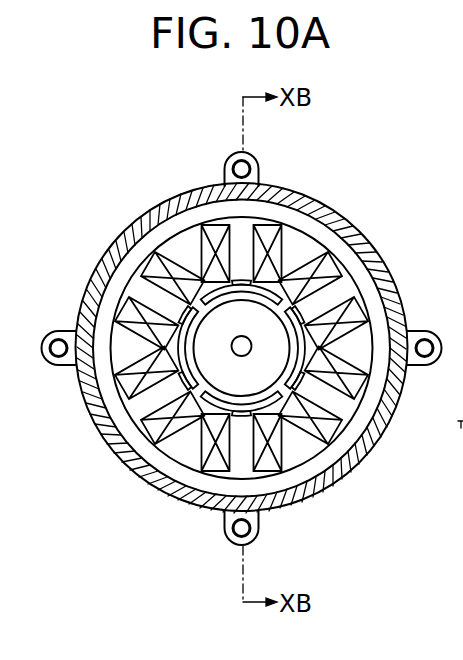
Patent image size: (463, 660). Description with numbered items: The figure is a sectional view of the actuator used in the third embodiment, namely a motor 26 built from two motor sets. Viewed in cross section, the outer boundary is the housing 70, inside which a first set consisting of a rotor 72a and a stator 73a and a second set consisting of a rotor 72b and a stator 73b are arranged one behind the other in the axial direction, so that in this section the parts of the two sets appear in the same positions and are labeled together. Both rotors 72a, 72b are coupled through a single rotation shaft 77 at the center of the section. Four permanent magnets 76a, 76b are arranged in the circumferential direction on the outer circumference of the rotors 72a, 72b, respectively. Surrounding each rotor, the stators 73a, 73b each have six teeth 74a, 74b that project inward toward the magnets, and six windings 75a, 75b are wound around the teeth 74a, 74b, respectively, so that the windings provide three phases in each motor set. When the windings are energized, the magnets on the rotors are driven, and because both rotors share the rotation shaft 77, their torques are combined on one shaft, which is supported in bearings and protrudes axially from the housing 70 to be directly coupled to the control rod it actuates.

The motor 26 is at (412, 131).
The housing 70 is at (95, 275).
The rotor 72a is at (230, 377).
The rotor 72b is at (213, 481).
The stator 73a is at (117, 412).
The stator 73b is at (213, 351).
The teeth 74a is at (245, 240).
The teeth 74b is at (340, 293).
The windings 75a is at (168, 267).
The windings 75b is at (192, 248).
The permanent magnets 76a is at (270, 393).
The permanent magnets 76b is at (289, 439).
The rotation shaft 77 is at (249, 352).